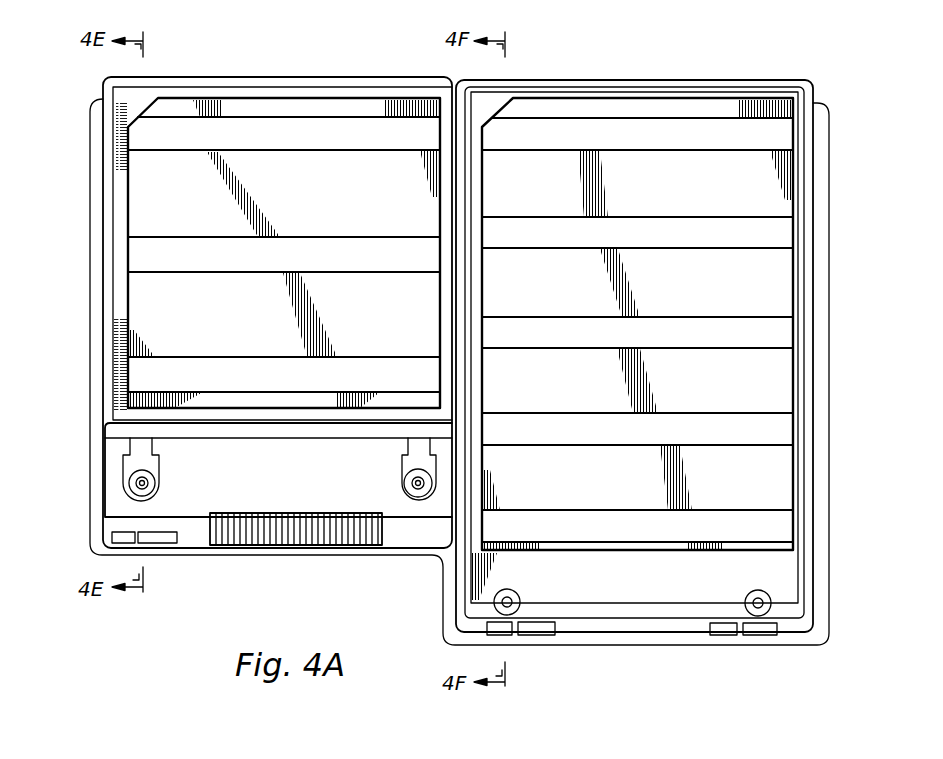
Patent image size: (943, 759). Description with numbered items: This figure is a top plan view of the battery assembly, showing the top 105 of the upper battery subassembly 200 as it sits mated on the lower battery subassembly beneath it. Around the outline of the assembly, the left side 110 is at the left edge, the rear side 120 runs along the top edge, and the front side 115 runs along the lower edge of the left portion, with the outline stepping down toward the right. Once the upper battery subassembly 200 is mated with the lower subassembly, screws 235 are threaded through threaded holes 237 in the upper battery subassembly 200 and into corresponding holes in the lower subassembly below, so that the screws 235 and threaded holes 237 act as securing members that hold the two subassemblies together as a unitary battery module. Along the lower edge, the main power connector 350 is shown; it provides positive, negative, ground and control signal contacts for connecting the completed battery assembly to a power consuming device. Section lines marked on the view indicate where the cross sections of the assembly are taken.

The left side 110 is at (102, 222).
The rear side 120 is at (619, 77).
The upper battery subassembly 200 is at (702, 85).
The top 105 is at (705, 193).
The front side 115 is at (337, 557).
The main power connector 350 is at (233, 548).
The threaded holes 237 is at (158, 458).
The screws 235 is at (155, 483).